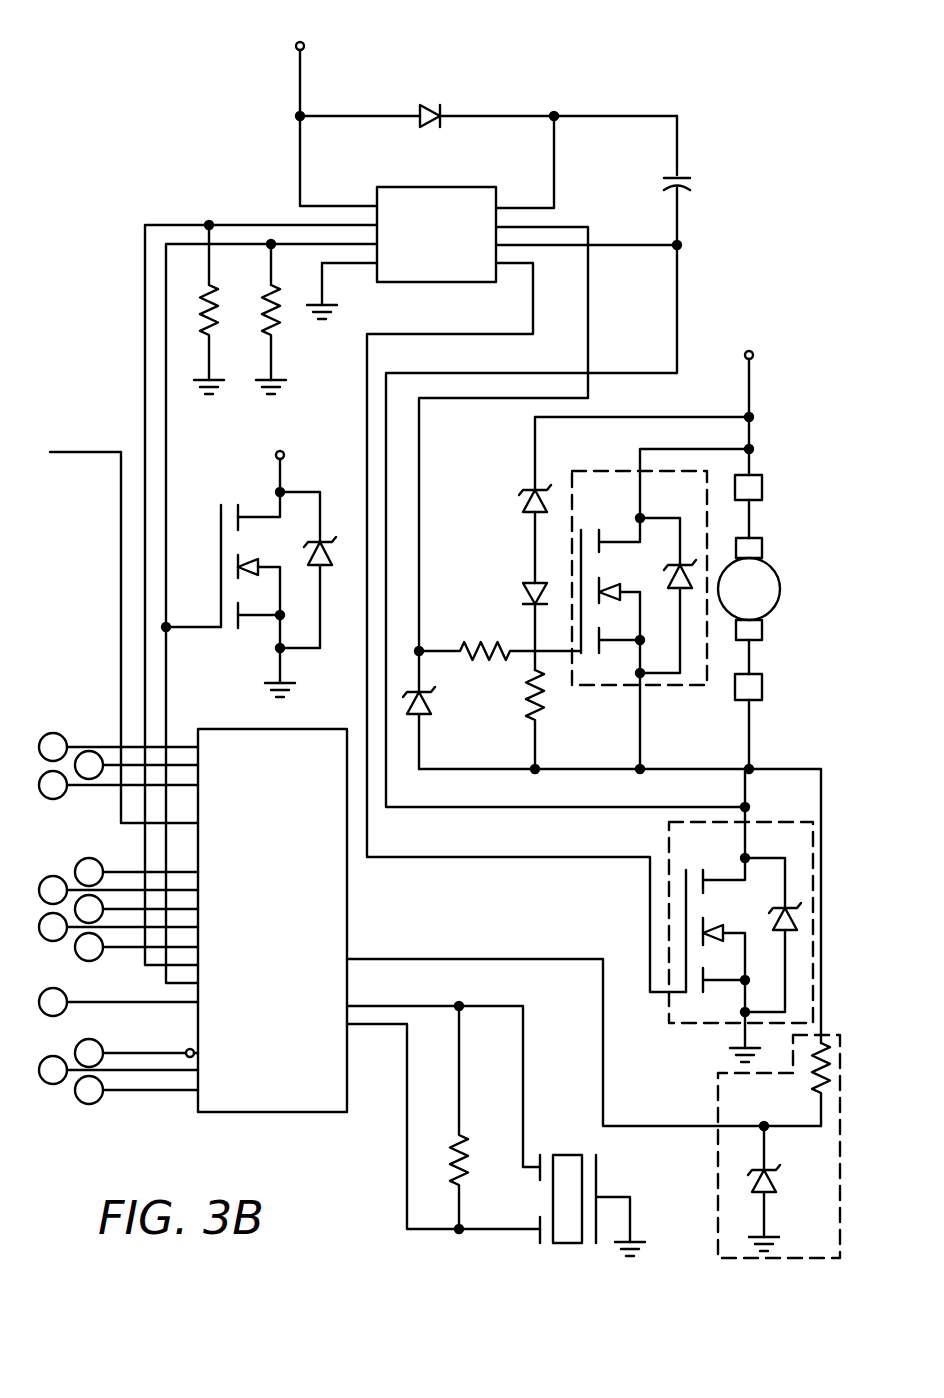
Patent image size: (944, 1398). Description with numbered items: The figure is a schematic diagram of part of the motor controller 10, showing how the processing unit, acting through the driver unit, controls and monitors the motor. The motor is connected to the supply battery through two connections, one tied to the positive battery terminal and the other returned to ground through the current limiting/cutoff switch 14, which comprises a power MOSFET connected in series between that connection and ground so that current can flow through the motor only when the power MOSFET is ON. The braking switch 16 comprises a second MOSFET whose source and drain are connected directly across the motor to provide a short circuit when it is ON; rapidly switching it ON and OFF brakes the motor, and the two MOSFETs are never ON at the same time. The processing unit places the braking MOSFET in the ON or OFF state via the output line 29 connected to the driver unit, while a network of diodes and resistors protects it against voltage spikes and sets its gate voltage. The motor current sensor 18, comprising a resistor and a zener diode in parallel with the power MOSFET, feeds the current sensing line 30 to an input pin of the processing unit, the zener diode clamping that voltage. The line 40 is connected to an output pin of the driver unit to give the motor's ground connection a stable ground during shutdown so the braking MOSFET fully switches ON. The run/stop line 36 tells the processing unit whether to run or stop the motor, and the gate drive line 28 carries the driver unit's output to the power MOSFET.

The motor controller 10 is at (158, 143).
The current limiting/cutoff switch 14 is at (669, 826).
The braking switch 16 is at (612, 470).
The motor current sensor 18 is at (718, 1082).
The driver output line to low side switch gate 28 is at (533, 300).
The output line 29 is at (588, 292).
The current sensing line 30 is at (660, 1126).
The run/stop line 36 is at (677, 282).
The line 40 is at (749, 769).